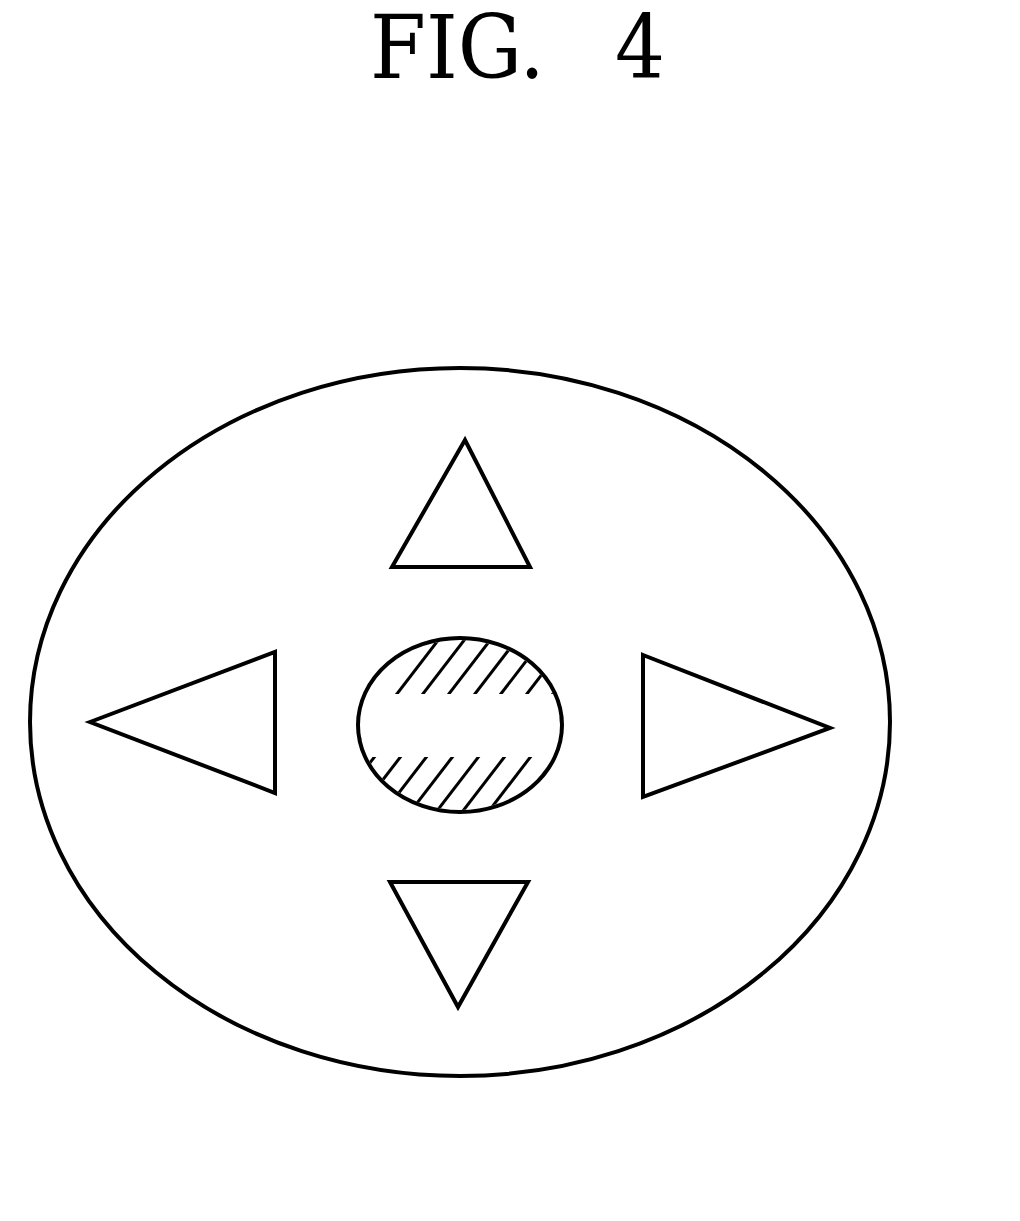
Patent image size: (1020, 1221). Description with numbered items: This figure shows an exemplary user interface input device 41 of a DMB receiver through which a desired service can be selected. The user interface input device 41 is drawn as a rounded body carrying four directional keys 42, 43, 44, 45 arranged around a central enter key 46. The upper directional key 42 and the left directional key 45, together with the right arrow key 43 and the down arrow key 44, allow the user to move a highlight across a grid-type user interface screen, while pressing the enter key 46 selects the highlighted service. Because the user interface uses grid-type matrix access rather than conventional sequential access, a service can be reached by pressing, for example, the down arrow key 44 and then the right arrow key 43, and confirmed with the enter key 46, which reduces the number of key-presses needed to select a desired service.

The user interface input device 41 is at (743, 460).
The directional key 42 is at (503, 510).
The right arrow key 43 is at (727, 687).
The down arrow key 44 is at (508, 927).
The directional key 45 is at (187, 763).
The enter key 46 is at (378, 658).